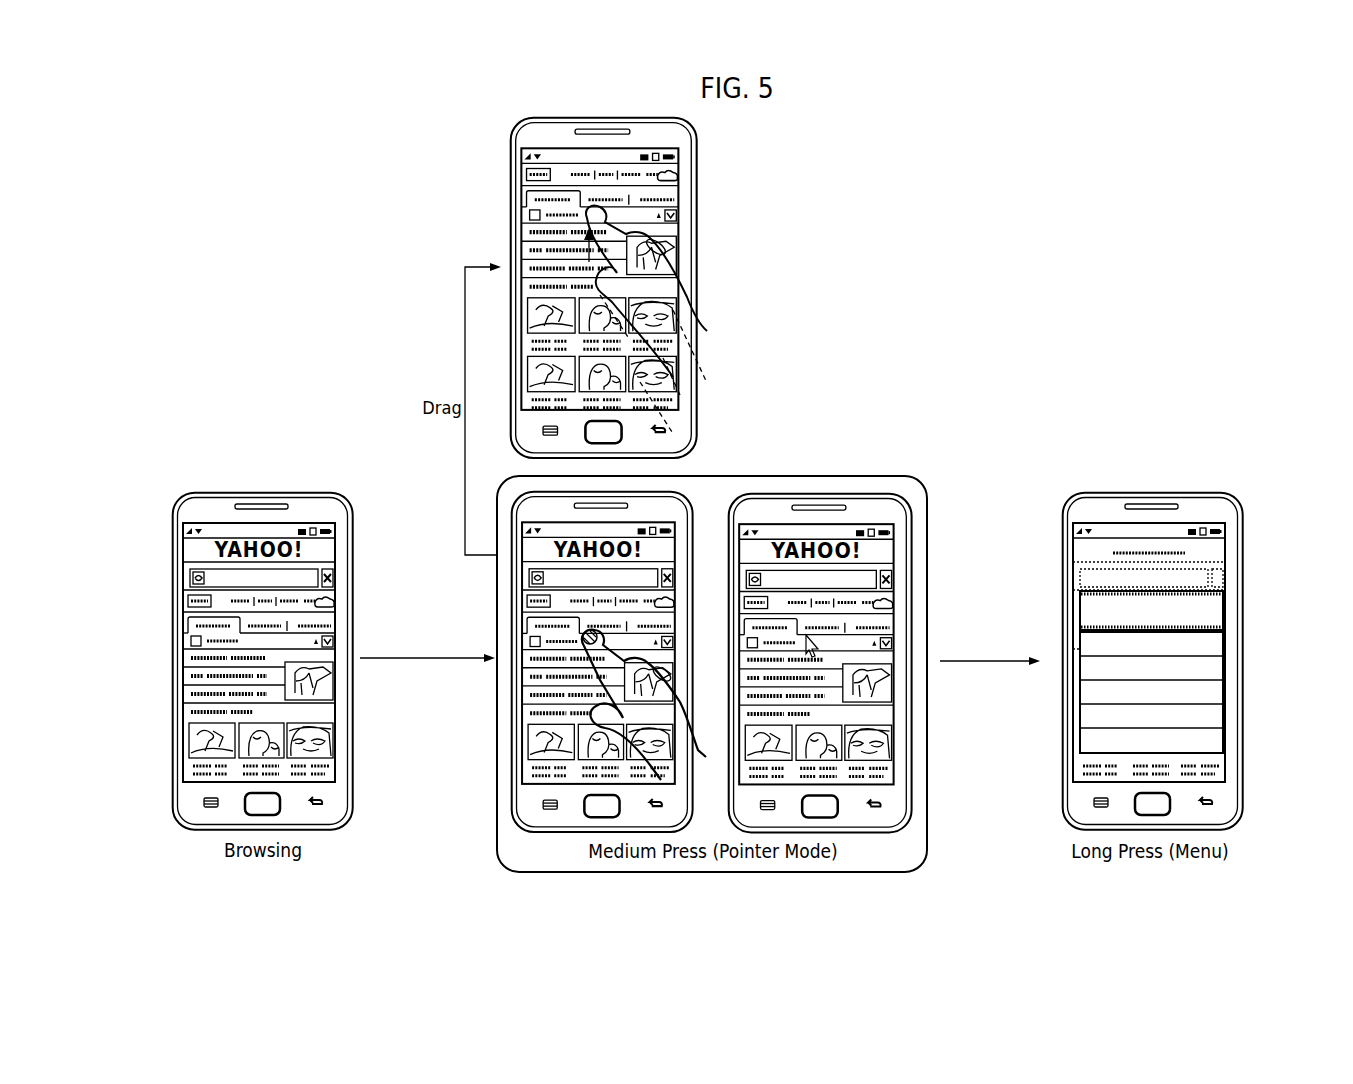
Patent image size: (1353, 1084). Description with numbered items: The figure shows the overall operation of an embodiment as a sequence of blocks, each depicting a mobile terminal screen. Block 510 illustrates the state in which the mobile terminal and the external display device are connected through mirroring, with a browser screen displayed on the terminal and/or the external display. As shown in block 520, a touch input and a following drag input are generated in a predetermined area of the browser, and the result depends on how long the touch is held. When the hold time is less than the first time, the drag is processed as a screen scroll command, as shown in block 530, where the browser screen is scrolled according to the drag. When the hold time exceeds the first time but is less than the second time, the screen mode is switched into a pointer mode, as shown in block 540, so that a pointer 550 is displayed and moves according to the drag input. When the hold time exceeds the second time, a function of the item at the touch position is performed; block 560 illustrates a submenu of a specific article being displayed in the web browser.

The block illustrating mirroring-connected browsing state 510 is at (264, 492).
The block illustrating touch and drag input 520 is at (424, 609).
The block illustrating screen scroll 530 is at (696, 182).
The block illustrating pointer mode 540 is at (818, 477).
The pointer 550 is at (817, 647).
The block illustrating submenu display 560 is at (1153, 591).